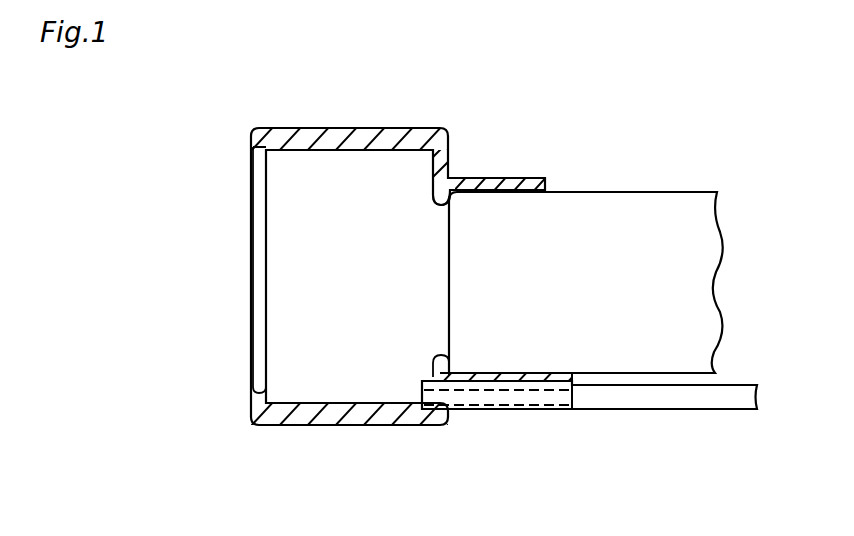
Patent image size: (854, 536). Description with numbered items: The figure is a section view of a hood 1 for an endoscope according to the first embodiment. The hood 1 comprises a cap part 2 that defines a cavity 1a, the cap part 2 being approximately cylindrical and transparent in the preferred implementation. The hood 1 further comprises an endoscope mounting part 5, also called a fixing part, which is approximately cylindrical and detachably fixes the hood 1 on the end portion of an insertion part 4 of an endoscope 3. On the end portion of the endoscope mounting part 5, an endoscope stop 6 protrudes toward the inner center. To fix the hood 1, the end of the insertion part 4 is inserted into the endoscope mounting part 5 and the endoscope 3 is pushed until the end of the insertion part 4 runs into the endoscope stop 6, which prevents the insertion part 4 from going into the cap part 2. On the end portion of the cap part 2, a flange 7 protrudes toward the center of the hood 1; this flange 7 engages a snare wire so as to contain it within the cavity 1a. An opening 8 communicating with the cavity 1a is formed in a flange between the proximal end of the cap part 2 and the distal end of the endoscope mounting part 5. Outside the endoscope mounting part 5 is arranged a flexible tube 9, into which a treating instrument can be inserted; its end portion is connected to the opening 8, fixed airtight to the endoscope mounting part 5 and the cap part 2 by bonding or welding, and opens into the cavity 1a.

The hood for an endoscope 1 is at (340, 108).
The cavity 1a is at (362, 291).
The cap part 2 is at (378, 132).
The endoscope 3 is at (698, 178).
The insertion part 4 is at (649, 197).
The endoscope mounting part 5 is at (505, 179).
The endoscope stop 6 is at (436, 200).
The flange 7 is at (256, 145).
The opening 8 is at (428, 379).
The flexible tube 9 is at (618, 410).